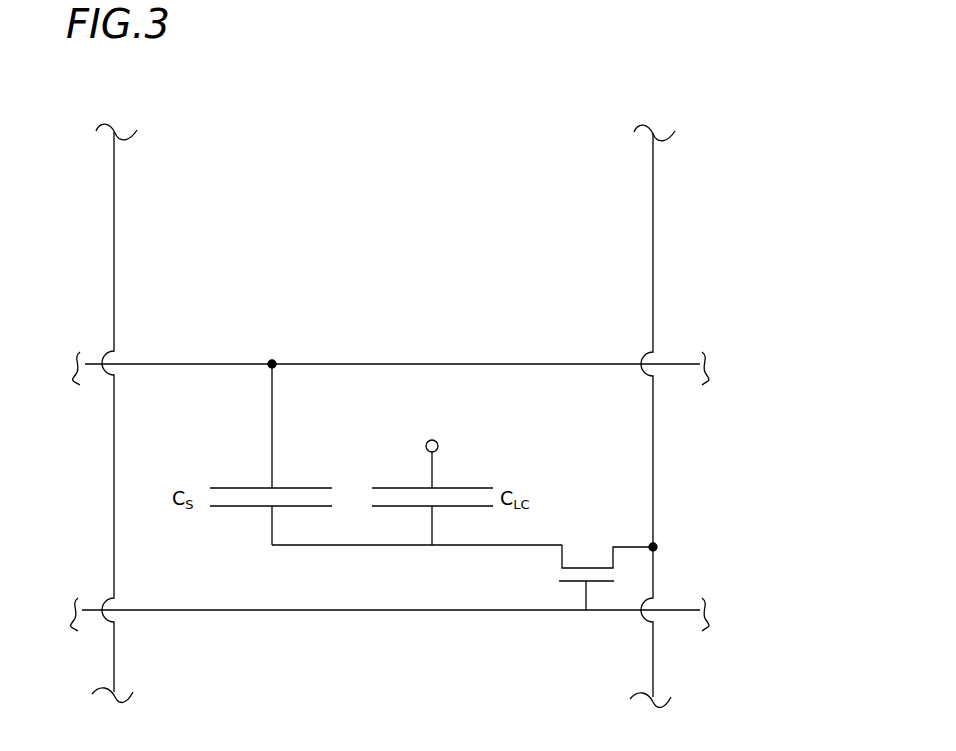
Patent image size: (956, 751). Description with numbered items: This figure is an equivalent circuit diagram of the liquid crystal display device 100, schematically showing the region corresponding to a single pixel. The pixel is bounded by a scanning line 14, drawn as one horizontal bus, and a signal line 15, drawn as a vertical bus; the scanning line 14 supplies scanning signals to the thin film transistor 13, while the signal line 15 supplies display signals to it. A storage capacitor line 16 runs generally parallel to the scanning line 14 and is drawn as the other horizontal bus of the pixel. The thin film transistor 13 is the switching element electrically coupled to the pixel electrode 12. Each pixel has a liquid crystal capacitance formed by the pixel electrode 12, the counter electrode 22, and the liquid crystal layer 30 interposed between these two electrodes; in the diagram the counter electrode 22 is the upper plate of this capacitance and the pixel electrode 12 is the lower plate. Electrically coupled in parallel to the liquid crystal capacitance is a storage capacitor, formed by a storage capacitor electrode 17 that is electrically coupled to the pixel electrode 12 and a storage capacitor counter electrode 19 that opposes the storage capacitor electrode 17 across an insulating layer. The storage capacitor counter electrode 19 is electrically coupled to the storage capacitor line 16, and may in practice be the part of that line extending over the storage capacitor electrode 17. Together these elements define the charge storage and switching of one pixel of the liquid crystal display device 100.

The liquid crystal display device 100 is at (724, 112).
The storage capacitor line 16 is at (440, 364).
The scanning line 14 is at (512, 613).
The signal line 15 is at (653, 452).
The storage capacitor counter electrode 19 is at (248, 487).
The storage capacitor electrode 17 is at (243, 507).
The liquid crystal layer 30 is at (383, 496).
The counter electrode 22 is at (455, 487).
The pixel electrode 12 is at (460, 507).
The thin film transistor 13 is at (586, 545).